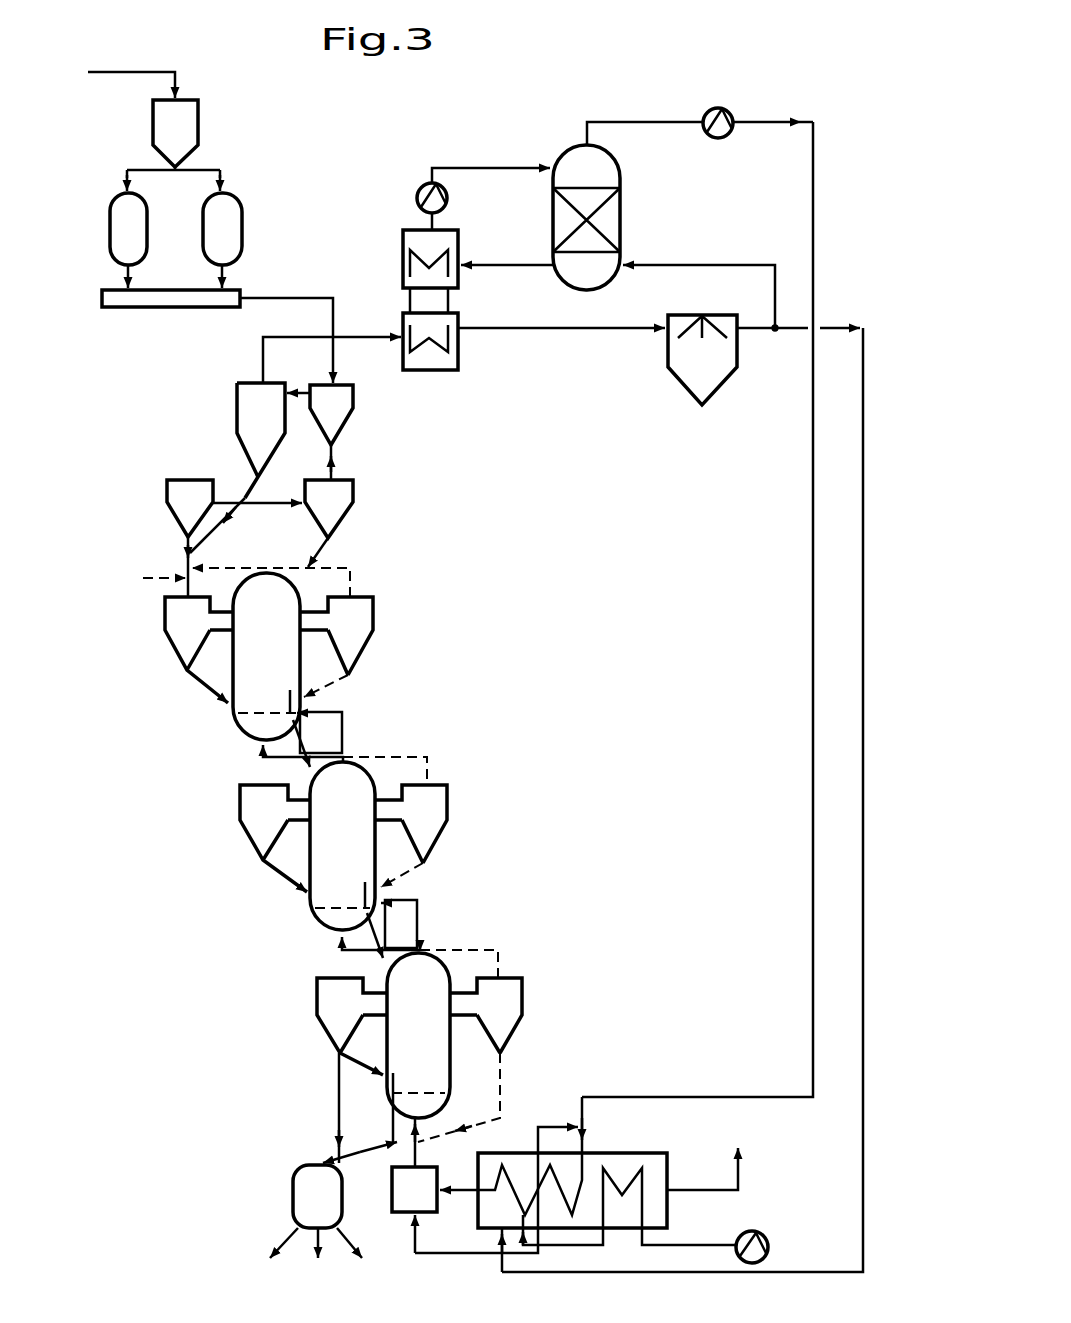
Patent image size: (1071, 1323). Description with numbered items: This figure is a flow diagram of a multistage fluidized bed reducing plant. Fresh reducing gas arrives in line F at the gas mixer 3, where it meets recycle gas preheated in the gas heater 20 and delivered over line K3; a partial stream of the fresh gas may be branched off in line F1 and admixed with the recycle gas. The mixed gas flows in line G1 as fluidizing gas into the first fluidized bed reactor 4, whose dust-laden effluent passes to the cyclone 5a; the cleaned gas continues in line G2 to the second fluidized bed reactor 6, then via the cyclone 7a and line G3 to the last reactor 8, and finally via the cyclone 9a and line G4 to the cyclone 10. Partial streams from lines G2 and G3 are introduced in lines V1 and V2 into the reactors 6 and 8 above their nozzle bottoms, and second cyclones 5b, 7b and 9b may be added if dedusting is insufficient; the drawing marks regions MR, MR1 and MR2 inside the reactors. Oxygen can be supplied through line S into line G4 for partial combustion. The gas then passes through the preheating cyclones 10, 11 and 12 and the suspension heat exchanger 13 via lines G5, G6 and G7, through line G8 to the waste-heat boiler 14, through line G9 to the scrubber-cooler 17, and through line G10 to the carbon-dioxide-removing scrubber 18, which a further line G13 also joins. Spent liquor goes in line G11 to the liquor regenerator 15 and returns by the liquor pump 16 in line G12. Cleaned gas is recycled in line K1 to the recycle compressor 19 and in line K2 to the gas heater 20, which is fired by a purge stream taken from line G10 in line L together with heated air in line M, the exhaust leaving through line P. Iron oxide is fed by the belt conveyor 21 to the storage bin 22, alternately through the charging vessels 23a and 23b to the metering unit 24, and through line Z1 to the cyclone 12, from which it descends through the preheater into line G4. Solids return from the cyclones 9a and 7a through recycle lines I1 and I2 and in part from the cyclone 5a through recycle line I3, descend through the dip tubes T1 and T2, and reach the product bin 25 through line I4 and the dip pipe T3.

The gas mixer 3 is at (392, 1190).
The first fluidized bed reactor 4 is at (421, 1036).
The cyclone 5a is at (318, 1005).
The second cyclone 5b is at (512, 1000).
The second fluidized bed reactor 6 is at (372, 778).
The cyclone 7a is at (242, 808).
The second cyclone 7b is at (447, 808).
The fluidized bed reactor 8 is at (272, 647).
The cyclone 9a is at (166, 628).
The second cyclone 9b is at (373, 620).
The cyclone 10 is at (167, 488).
The cyclone 11 is at (353, 488).
The cyclone 12 is at (351, 420).
The suspension heat exchanger 13 is at (237, 410).
The waste-heat boiler 14 is at (433, 375).
The liquor regenerator 15 is at (403, 253).
The liquor pump 16 is at (448, 200).
The scrubber-cooler 17 is at (692, 382).
The CO2-removing scrubber 18 is at (620, 207).
The recycle compressor 19 is at (733, 112).
The gas heater 20 is at (620, 1167).
The belt conveyor 21 is at (131, 70).
The storage bin for oxide 22 is at (198, 123).
The charging vessel 23a is at (110, 216).
The charging vessel 23b is at (242, 216).
The metering unit 24 is at (162, 309).
The product bin 25 is at (293, 1190).
The line Z1 is at (289, 296).
The line G1 is at (417, 1153).
The line G2 is at (340, 952).
The line G3 is at (262, 763).
The line G4 is at (186, 553).
The line G5 is at (264, 506).
The line G6 is at (337, 455).
The line G7 is at (293, 390).
The line G8 is at (367, 341).
The line G9 is at (557, 332).
The line G10 is at (798, 351).
The line G11 is at (508, 270).
The line G12 is at (485, 167).
The gas stream G13 is at (701, 262).
The line K1 is at (657, 120).
The line K2 is at (815, 598).
The line K3 is at (460, 1197).
The line L is at (863, 693).
The line S is at (143, 578).
The line F is at (412, 1237).
The line F1 is at (455, 1255).
The line P is at (703, 1190).
The line M is at (705, 1243).
The recycle line I1 is at (207, 692).
The recycle line I2 is at (278, 875).
The solids return I3 is at (365, 1070).
The line I4 is at (337, 1105).
The dip tube T1 is at (317, 739).
The dip pipe T2 is at (392, 929).
The dip pipe T3 is at (363, 1153).
The line V1 is at (417, 915).
The line V2 is at (345, 727).
The mixing region MR is at (418, 1077).
The mixing region MR1 is at (342, 890).
The mixing region MR2 is at (267, 695).